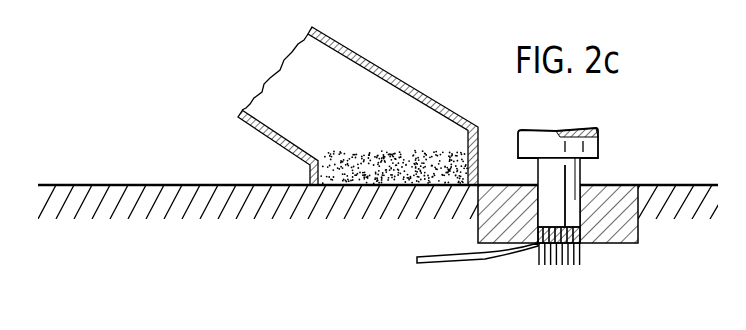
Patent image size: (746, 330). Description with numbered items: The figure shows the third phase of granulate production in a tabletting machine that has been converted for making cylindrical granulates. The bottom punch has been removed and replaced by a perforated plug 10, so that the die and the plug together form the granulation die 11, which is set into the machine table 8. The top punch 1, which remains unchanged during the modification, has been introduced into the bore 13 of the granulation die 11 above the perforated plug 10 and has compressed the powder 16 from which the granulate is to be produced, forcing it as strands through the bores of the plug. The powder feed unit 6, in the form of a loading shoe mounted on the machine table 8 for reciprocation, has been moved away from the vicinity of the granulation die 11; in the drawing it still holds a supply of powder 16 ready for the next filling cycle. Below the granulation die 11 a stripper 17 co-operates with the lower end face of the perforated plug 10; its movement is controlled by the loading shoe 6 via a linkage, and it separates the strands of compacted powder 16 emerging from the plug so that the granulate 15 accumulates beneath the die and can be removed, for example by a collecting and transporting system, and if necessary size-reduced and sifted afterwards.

The top punch 1 is at (566, 177).
The powder feed unit 6 is at (393, 75).
The machine table 8 is at (266, 205).
The perforated plug 10 is at (542, 243).
The granulation die 11 is at (638, 232).
The bore 13 is at (582, 224).
The granulate 15 is at (571, 265).
The powder 16 is at (453, 153).
The stripper 17 is at (447, 263).